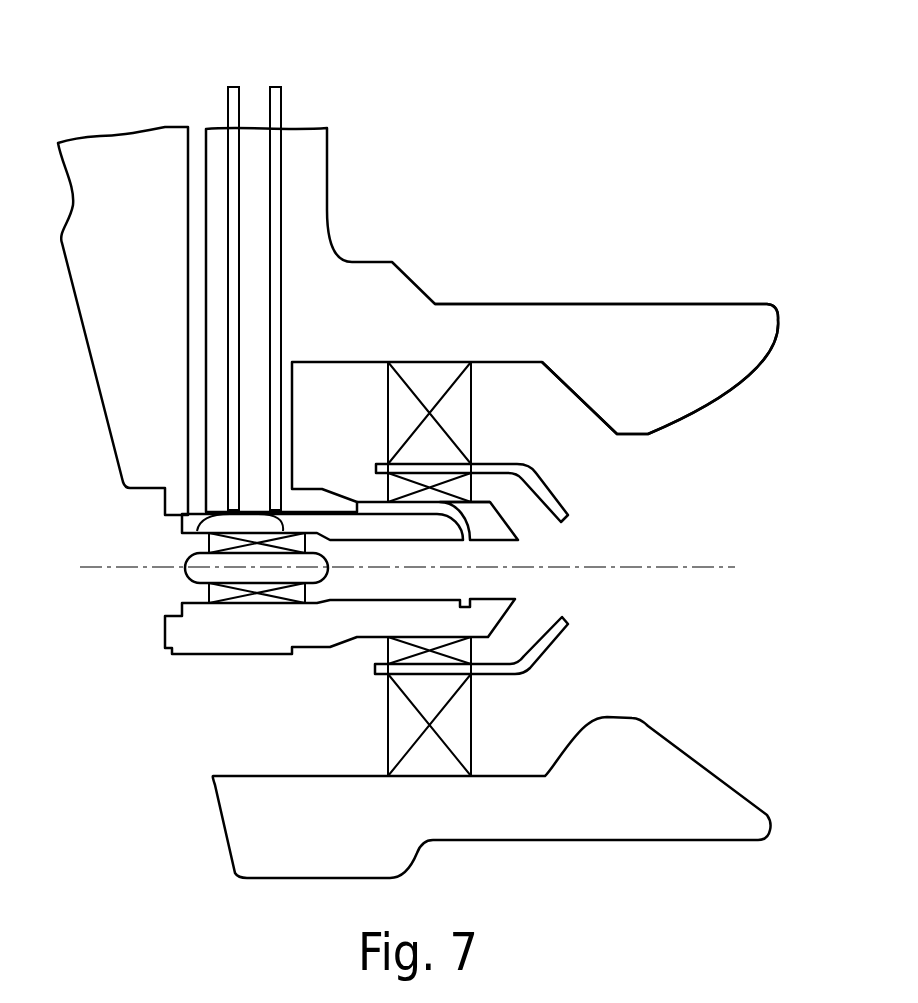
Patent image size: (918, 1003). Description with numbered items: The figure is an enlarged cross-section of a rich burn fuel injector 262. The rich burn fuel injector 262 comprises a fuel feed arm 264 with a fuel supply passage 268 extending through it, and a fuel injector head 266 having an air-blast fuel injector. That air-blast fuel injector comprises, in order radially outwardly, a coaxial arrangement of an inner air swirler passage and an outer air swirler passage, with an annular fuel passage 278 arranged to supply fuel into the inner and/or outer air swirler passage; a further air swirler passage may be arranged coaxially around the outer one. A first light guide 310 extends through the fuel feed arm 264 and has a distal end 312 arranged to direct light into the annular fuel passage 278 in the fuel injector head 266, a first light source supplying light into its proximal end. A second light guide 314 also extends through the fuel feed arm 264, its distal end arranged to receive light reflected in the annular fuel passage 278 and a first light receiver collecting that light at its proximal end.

The rich burn fuel injector 262 is at (627, 188).
The fuel feed arm 264 is at (316, 177).
The fuel injector head 266 is at (656, 270).
The fuel supply passage 268 is at (200, 137).
The annular fuel passage 278 is at (313, 512).
The first light guide 310 is at (228, 97).
The distal end of first light guide 312 is at (182, 525).
The second light guide 314 is at (283, 105).